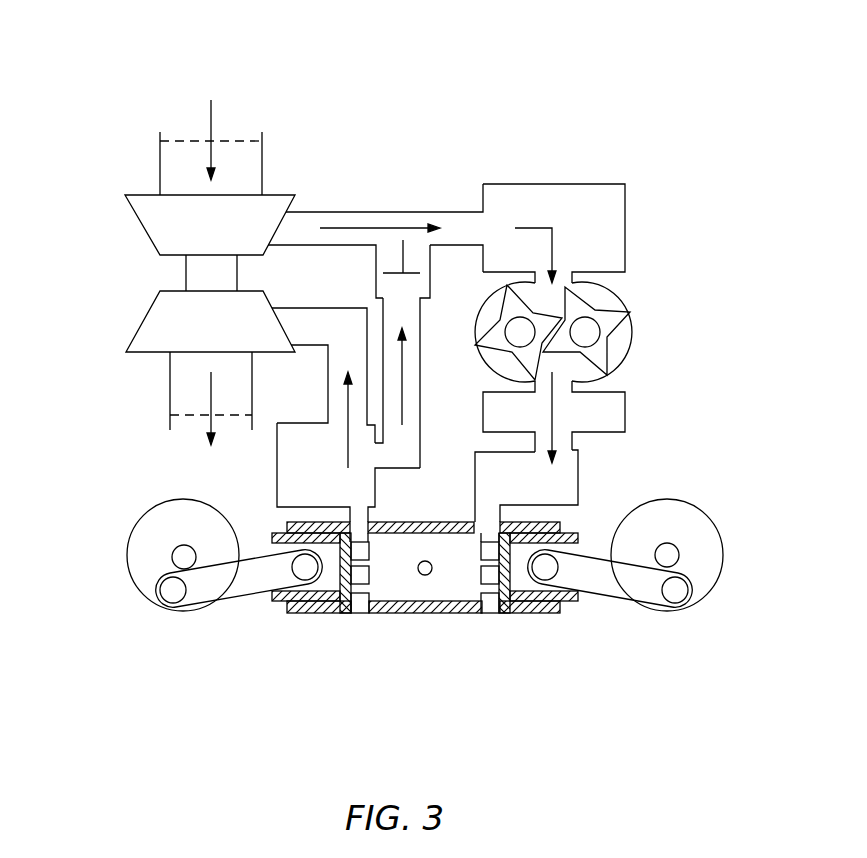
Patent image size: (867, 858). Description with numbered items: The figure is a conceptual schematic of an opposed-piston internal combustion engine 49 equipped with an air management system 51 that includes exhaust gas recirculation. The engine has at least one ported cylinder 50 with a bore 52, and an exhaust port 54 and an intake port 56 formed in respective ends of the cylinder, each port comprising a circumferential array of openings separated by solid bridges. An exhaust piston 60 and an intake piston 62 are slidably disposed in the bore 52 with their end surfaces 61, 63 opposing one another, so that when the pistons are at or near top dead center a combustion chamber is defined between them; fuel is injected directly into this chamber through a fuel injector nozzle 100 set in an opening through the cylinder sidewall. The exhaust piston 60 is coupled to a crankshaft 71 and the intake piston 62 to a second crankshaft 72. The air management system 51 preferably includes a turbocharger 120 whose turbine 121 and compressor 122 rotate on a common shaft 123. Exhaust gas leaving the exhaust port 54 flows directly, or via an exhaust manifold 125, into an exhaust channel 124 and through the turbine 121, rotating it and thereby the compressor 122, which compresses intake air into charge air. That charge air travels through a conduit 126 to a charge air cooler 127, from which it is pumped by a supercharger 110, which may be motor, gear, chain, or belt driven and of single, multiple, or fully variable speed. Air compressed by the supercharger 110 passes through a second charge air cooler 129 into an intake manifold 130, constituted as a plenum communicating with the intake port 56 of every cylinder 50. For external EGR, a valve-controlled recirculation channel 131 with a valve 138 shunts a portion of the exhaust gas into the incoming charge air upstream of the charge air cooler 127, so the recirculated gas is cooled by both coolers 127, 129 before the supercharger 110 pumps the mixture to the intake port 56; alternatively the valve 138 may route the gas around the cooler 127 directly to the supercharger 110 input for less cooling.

The air management system 51 is at (448, 62).
The internal combustion engine 49 is at (697, 416).
The turbocharger 120 is at (126, 273).
The compressor 122 is at (140, 226).
The turbine 121 is at (140, 330).
The common shaft 123 is at (237, 270).
The exhaust channel 124 is at (328, 390).
The exhaust manifold 125 is at (272, 470).
The conduit 126 is at (370, 212).
The charge air cooler 127 is at (625, 238).
The supercharger 110 is at (620, 295).
The charge air cooler 129 is at (625, 410).
The intake manifold 130 is at (578, 488).
The recirculation channel 131 is at (420, 365).
The valve 138 is at (404, 253).
The ported cylinder 50 is at (443, 576).
The bore 52 is at (443, 597).
The exhaust port 54 is at (358, 627).
The intake port 56 is at (496, 628).
The exhaust piston 60 is at (274, 612).
The intake piston 62 is at (574, 532).
The end surface 61 is at (357, 553).
The end surface 63 is at (489, 553).
The fuel injector nozzle 100 is at (430, 561).
The crankshaft 71 is at (183, 613).
The crankshaft 72 is at (667, 613).